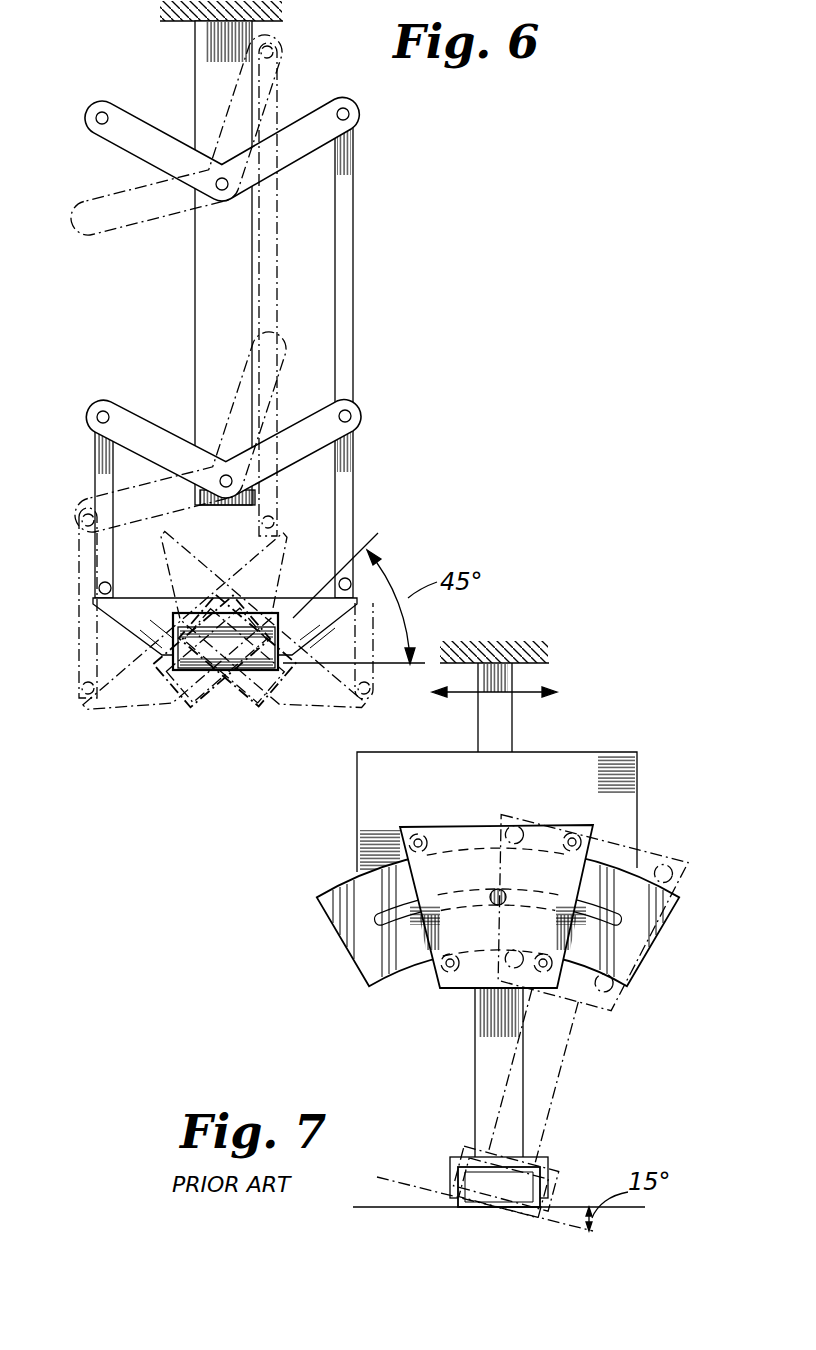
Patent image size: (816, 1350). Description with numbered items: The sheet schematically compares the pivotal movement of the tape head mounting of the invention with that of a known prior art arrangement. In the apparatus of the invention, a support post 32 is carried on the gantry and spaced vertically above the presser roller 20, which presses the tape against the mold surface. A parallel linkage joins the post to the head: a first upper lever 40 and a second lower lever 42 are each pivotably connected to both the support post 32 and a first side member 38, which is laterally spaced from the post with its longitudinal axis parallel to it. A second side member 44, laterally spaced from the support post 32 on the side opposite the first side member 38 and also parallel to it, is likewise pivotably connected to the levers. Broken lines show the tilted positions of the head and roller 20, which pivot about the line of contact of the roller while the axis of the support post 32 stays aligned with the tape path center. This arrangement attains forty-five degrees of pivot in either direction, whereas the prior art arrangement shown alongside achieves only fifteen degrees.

In FIG. 6, the presser roller 20 is at (233, 668).
In FIG. 7, the presser roller 20 is at (549, 1181).
In FIG. 6, the support post 32 is at (198, 47).
In FIG. 6, the first side member 38 is at (355, 264).
In FIG. 6, the first upper lever 40 is at (362, 114).
In FIG. 6, the second lower lever 42 is at (360, 413).
In FIG. 6, the second side member 44 is at (98, 570).